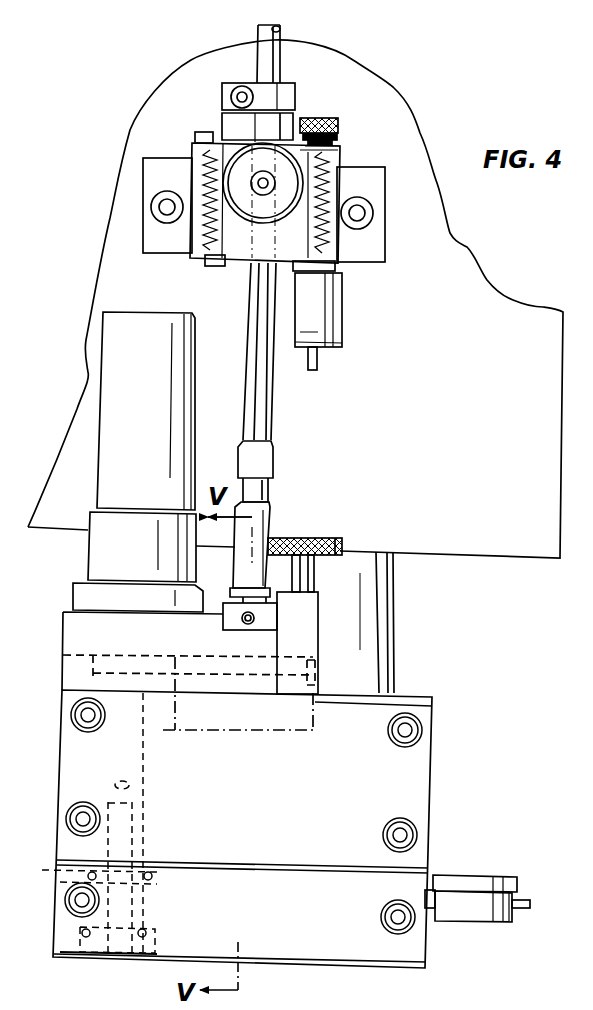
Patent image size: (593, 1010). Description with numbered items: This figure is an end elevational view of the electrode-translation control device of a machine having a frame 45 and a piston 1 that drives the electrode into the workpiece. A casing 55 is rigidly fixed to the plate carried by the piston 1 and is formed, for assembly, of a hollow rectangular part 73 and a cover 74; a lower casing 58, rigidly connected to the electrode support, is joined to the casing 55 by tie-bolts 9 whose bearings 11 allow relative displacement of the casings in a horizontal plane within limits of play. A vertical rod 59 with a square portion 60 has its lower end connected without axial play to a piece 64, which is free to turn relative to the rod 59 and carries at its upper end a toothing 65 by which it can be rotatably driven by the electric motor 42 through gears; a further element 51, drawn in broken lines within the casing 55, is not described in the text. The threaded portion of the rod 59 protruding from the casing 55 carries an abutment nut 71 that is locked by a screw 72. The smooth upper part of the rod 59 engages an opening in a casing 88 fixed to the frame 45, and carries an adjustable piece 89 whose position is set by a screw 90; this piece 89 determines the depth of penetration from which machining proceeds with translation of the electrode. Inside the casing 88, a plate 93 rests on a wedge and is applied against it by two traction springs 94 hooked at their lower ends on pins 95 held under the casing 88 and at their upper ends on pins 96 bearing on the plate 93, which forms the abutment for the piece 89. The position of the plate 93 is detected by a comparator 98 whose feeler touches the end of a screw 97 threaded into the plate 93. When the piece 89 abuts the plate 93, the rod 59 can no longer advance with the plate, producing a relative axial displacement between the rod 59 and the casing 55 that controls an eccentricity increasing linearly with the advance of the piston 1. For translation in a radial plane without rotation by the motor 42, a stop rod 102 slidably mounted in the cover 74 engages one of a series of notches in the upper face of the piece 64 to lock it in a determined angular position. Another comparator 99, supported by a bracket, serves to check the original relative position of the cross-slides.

The piston 1 is at (394, 641).
The tie-bolts 9 is at (98, 966).
The bearings 11 is at (78, 930).
The electric motor 42 is at (103, 385).
The frame 45 is at (295, 299).
The slot 51 is at (63, 657).
The casing 55 is at (82, 762).
The lower casing 58 is at (420, 961).
The vertical rod 59 is at (257, 33).
The square portion 60 is at (262, 497).
The piece 64 is at (270, 722).
The toothing 65 is at (318, 674).
The abutment nut 71 is at (277, 630).
The screw 72 is at (242, 621).
The hollow rectangular part 73 is at (66, 786).
The cover 74 is at (73, 621).
The casing 88 is at (385, 188).
The adjustable piece 89 is at (293, 95).
The screw 90 is at (222, 92).
The plate 93 is at (340, 151).
The traction springs 94 is at (333, 240).
The pins 95 is at (192, 261).
The pins 96 is at (195, 136).
The screw 97 is at (338, 121).
The comparator 98 is at (342, 300).
The comparator 99 is at (503, 868).
The stop rod 102 is at (341, 539).